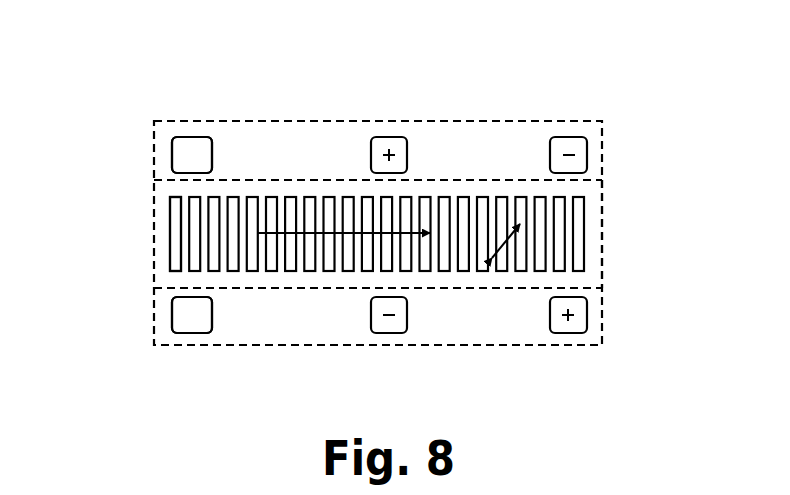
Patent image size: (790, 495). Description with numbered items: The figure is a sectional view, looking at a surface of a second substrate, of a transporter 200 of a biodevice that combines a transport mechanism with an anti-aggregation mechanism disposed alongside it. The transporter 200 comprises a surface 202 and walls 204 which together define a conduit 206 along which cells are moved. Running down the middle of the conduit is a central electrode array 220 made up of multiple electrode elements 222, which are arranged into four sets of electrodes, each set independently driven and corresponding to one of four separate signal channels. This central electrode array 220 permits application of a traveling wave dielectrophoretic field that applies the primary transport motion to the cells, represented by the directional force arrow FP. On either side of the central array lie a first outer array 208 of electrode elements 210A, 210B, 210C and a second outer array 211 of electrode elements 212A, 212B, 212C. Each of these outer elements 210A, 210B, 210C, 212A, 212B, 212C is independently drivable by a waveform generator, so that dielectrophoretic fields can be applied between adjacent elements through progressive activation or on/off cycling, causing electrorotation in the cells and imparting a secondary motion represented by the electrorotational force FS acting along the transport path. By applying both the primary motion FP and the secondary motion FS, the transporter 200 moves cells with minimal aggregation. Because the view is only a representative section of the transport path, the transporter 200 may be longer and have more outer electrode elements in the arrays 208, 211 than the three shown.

The transporter 200 is at (488, 118).
The surface 202 is at (273, 150).
The walls 204 is at (582, 181).
The conduit 206 is at (602, 232).
The first outer array 208 is at (166, 153).
The electrode element 210A is at (176, 137).
The electrode element 210B is at (388, 137).
The electrode element 210C is at (566, 137).
The second outer array 211 is at (166, 311).
The electrode element 212A is at (190, 333).
The electrode element 212B is at (388, 333).
The electrode element 212C is at (566, 335).
The central electrode array 220 is at (165, 215).
The electrode elements 222 is at (170, 258).
The directional force arrow FP is at (397, 235).
The electrorotational force FS is at (522, 222).